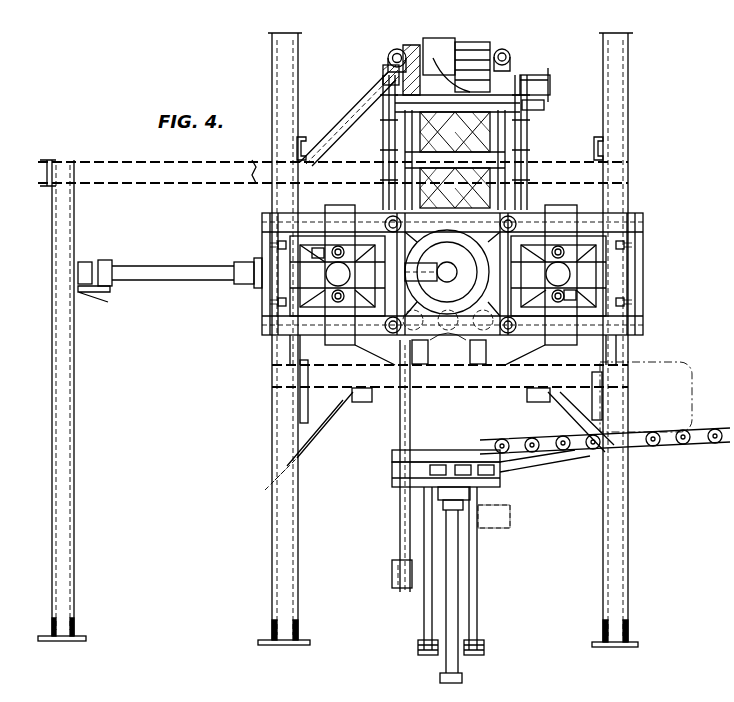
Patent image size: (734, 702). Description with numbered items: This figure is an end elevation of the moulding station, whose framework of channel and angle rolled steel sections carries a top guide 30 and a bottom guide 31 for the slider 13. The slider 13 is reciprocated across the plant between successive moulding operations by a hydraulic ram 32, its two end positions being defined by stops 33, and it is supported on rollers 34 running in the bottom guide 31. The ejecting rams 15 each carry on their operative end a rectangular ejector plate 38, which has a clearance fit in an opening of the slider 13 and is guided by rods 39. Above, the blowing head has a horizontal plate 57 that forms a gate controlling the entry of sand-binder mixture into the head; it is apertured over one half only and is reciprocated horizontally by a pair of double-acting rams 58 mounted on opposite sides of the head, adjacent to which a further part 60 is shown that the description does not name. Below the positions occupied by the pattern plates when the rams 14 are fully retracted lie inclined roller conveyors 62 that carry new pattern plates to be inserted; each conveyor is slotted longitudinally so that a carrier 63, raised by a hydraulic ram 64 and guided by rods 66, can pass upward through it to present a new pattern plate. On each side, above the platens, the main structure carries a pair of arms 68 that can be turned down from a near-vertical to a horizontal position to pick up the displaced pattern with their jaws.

The slider 13 is at (290, 280).
The rams 14 is at (475, 279).
The ejecting rams 15 is at (451, 275).
The top guide 30 is at (635, 222).
The bottom guide 31 is at (630, 330).
The hydraulic ram 32 is at (130, 270).
The stops 33 is at (276, 246).
The rollers 34 is at (472, 330).
The ejector plate 38 is at (318, 255).
The rods 39 is at (344, 254).
The horizontal plate 57 is at (424, 61).
The double-acting rams 58 is at (391, 56).
The support bracket 60 is at (550, 78).
The inclined roller conveyors 62 is at (689, 440).
The carrier 63 is at (412, 466).
The hydraulic ram 64 is at (458, 548).
The rods 66 is at (426, 607).
The arms 68 is at (395, 178).